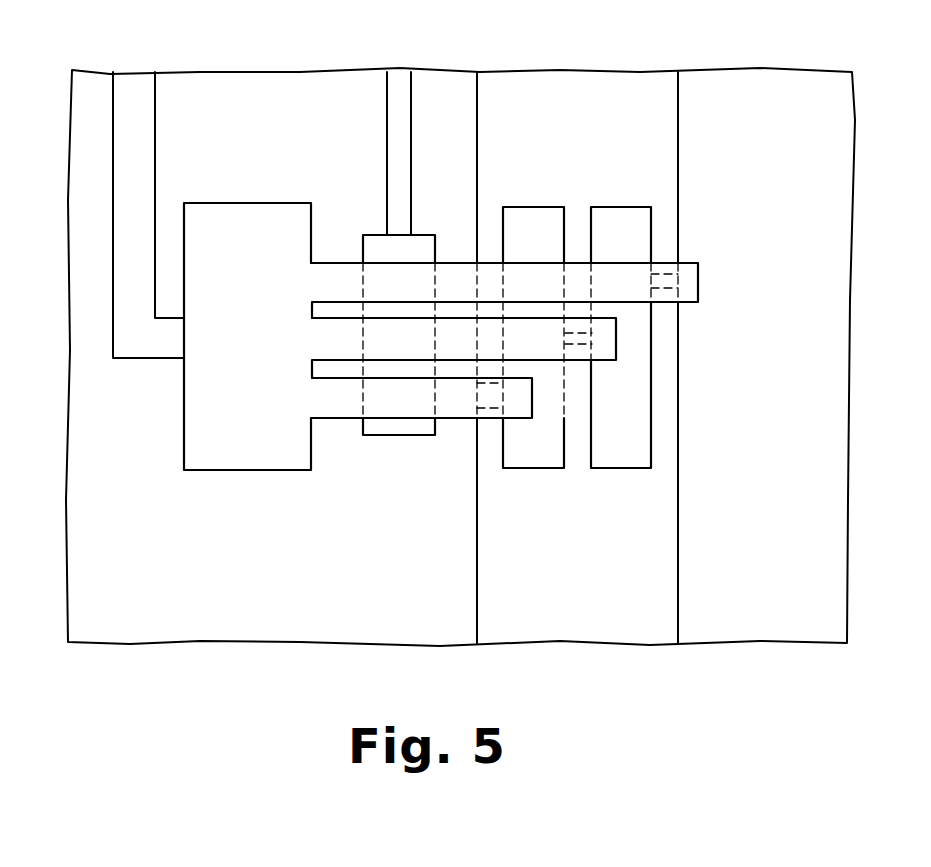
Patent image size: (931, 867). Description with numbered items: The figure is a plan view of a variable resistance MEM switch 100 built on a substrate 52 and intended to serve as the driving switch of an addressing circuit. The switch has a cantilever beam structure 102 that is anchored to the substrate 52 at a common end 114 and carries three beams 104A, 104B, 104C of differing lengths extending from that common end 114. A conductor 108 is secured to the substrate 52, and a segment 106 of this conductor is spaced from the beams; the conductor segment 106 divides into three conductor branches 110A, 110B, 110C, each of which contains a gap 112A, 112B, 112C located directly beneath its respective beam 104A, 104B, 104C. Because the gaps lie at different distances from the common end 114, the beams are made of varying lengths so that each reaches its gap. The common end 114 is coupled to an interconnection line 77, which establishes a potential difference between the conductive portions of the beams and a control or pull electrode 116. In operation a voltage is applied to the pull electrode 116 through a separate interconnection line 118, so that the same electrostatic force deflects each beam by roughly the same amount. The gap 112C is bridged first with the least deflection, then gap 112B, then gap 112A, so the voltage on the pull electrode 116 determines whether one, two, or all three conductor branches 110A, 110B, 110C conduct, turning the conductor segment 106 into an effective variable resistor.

The substrate 52 is at (172, 558).
The interconnection line 77 is at (112, 337).
The variable resistance MEM switch 100 is at (502, 317).
The cantilever beam structure 102 is at (502, 368).
The beam 104A is at (538, 403).
The beam 104B is at (617, 352).
The beam 104C is at (698, 280).
The conductor segment 106 is at (700, 357).
The conductor 108 is at (650, 110).
The conductor branch 110A is at (490, 215).
The conductor branch 110B is at (580, 218).
The conductor branch 110C is at (665, 218).
The gap 112A is at (462, 415).
The gap 112B is at (590, 318).
The gap 112C is at (689, 295).
The common end 114 is at (232, 455).
The pull electrode 116 is at (425, 235).
The interconnection line 118 is at (413, 103).